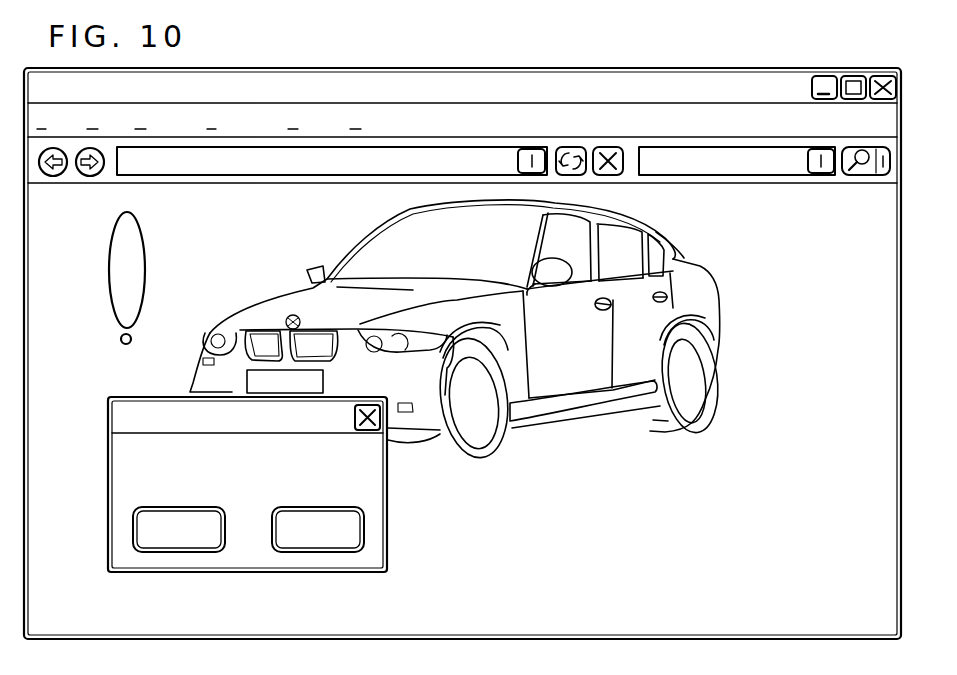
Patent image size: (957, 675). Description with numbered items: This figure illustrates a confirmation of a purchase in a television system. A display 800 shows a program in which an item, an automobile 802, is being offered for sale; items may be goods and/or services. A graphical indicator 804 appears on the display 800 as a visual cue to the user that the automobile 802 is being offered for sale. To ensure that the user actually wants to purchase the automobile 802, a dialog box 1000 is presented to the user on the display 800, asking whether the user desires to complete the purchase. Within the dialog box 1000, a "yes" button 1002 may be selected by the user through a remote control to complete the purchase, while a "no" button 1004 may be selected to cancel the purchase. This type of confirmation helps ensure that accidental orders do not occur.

The display 800 is at (650, 68).
The automobile 802 is at (712, 282).
The graphical indicator 804 is at (145, 270).
The dialog box 1000 is at (389, 515).
The "yes" button 1002 is at (178, 553).
The "no" button 1004 is at (318, 553).